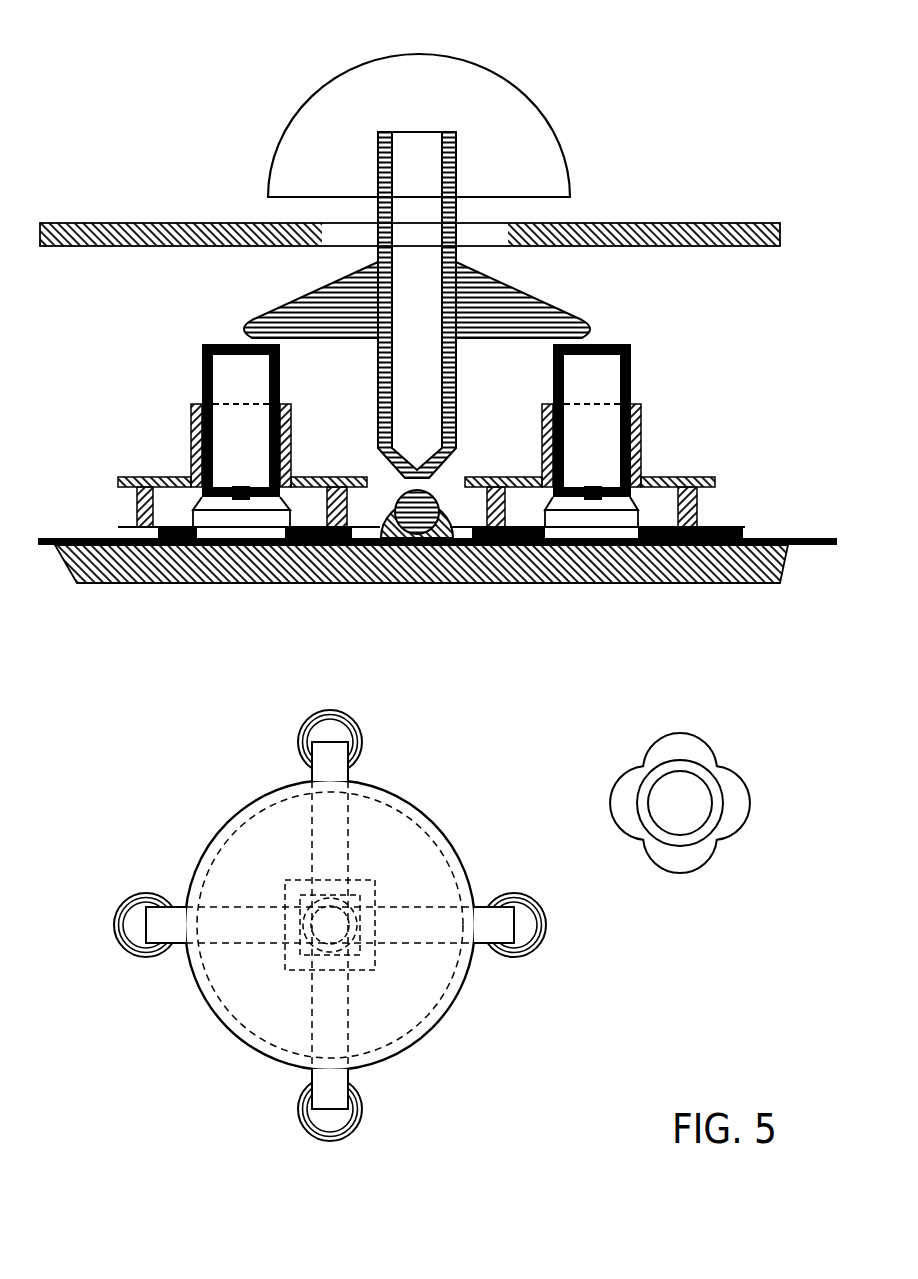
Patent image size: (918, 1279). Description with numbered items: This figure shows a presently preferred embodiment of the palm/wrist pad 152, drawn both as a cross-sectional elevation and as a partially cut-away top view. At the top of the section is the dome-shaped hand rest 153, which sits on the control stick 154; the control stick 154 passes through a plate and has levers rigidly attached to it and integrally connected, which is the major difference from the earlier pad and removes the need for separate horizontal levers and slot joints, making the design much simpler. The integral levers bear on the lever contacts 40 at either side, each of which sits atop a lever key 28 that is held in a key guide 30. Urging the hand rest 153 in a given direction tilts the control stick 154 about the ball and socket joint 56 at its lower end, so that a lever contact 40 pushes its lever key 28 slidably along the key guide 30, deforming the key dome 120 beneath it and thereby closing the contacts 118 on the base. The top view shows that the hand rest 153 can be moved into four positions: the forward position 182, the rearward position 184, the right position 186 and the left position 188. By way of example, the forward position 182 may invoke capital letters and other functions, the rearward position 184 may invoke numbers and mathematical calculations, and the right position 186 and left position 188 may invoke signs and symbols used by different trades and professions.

The palm/wrist pad 152 is at (763, 41).
The hand rest 153 is at (510, 100).
The control stick 154 is at (456, 214).
The lever contacts 40 is at (238, 330).
The lever key 28 is at (200, 383).
The key guide 30 is at (190, 440).
The key dome 120 is at (227, 508).
The contacts 118 is at (235, 550).
The ball and socket joint 56 is at (470, 562).
The forward position 182 is at (350, 743).
The rearward position 184 is at (350, 1110).
The right position 186 is at (530, 928).
The left position 188 is at (130, 926).